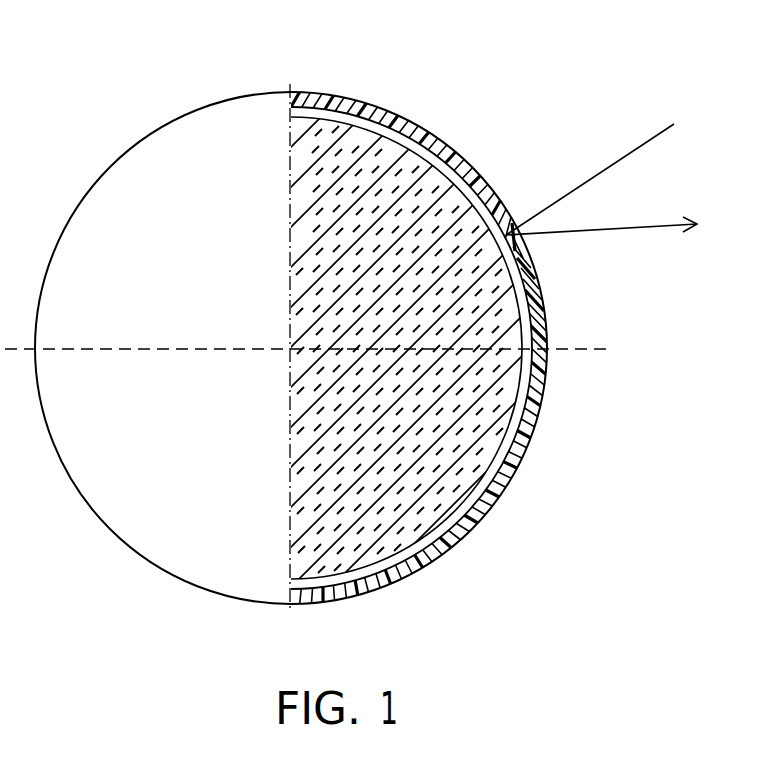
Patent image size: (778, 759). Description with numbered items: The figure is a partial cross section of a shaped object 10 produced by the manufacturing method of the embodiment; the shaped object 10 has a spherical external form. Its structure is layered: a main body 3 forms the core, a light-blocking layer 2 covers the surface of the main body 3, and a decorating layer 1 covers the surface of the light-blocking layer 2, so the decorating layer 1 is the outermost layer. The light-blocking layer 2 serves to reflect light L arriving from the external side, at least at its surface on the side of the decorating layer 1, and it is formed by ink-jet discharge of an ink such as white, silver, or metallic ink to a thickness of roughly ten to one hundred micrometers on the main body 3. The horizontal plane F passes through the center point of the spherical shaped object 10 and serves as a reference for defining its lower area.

The shaped object 10 is at (120, 80).
The decorating layer 1 is at (322, 100).
The light-blocking layer 2 is at (363, 126).
The main body 3 is at (387, 165).
The light L is at (601, 172).
The horizontal plane F is at (318, 351).